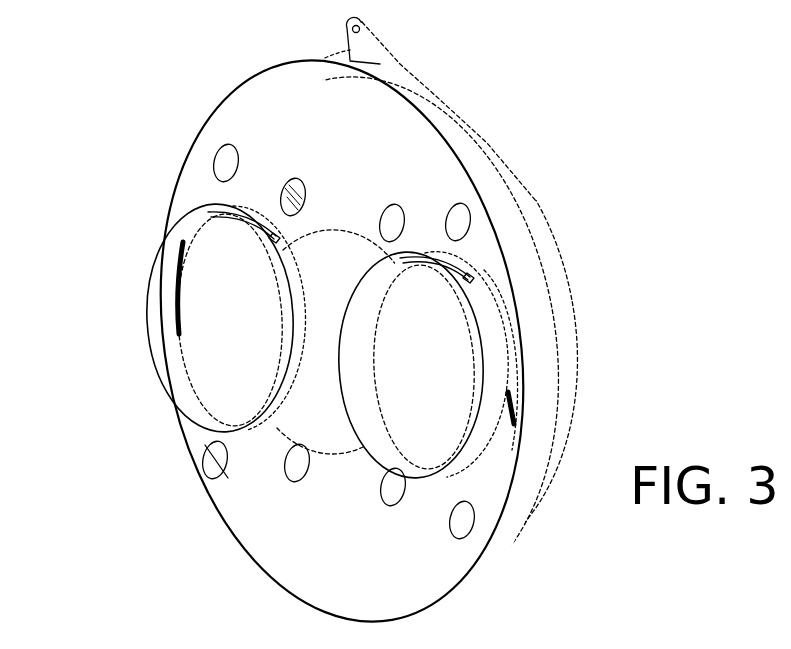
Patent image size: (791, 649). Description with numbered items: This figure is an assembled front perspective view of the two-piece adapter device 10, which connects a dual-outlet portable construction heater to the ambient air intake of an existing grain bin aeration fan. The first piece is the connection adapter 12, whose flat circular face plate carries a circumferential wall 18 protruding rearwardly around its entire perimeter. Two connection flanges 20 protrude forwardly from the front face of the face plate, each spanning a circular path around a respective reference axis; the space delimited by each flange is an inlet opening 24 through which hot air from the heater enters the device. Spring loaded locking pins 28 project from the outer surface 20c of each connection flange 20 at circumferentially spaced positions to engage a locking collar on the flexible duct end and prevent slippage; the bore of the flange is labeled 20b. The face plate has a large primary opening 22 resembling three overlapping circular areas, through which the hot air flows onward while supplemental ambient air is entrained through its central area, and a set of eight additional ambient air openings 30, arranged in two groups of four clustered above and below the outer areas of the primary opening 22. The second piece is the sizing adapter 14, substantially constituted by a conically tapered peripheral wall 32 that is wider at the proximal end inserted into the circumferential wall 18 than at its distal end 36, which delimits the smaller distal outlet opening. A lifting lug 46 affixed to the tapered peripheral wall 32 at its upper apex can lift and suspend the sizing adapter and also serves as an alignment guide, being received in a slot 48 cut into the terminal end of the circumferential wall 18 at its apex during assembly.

The adapter device 10 is at (105, 113).
The connection adapter 12 is at (211, 108).
The sizing adapter 14 is at (552, 227).
The circumferential wall 18 is at (470, 163).
The connection flanges 20 is at (243, 223).
The bore of boss 20b is at (172, 369).
The outer surface of the flange 20c is at (290, 280).
The primary opening 22 is at (333, 433).
The inlet opening 24 is at (162, 334).
The spring loaded locking pins 28 is at (273, 239).
The ambient air openings 30 is at (311, 351).
The tapered peripheral wall 32 is at (553, 297).
The distal end 36 is at (578, 352).
The lifting lug 46 is at (372, 52).
The slot 48 is at (380, 64).